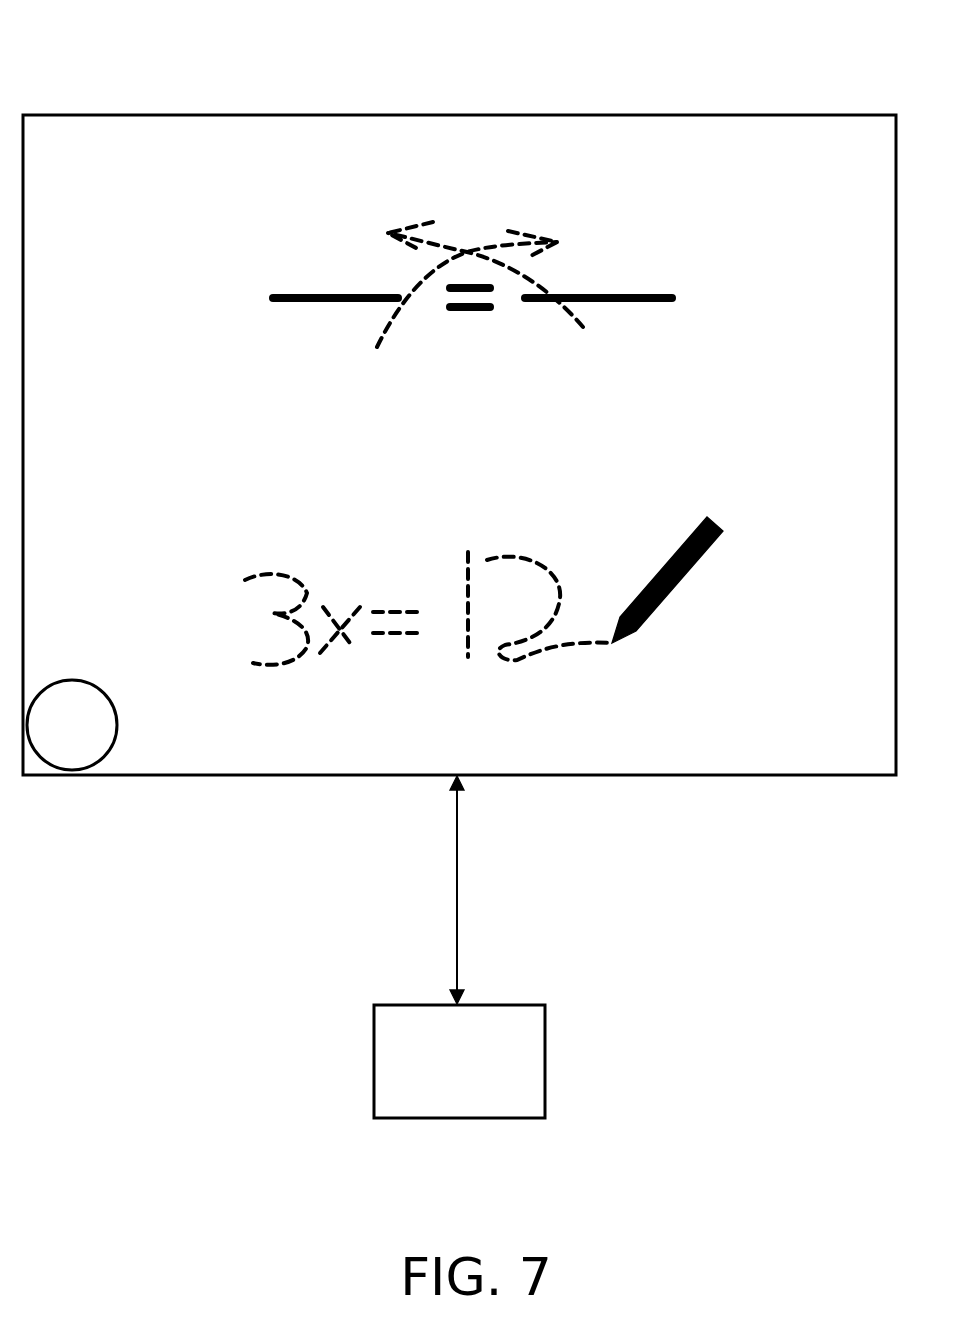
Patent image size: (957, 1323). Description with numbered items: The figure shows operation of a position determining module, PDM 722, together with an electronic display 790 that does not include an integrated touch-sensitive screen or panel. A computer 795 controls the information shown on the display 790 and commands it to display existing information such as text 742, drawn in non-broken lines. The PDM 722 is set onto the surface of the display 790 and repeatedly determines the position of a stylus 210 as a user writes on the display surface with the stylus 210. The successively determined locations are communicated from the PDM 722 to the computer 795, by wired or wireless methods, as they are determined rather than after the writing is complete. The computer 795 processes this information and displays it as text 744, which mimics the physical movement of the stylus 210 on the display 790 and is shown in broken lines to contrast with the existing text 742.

The electronic display 790 is at (88, 104).
The text 742 is at (265, 286).
The text 744 is at (528, 217).
The stylus 210 is at (690, 595).
The PDM 722 is at (72, 725).
The computer 795 is at (459, 1061).